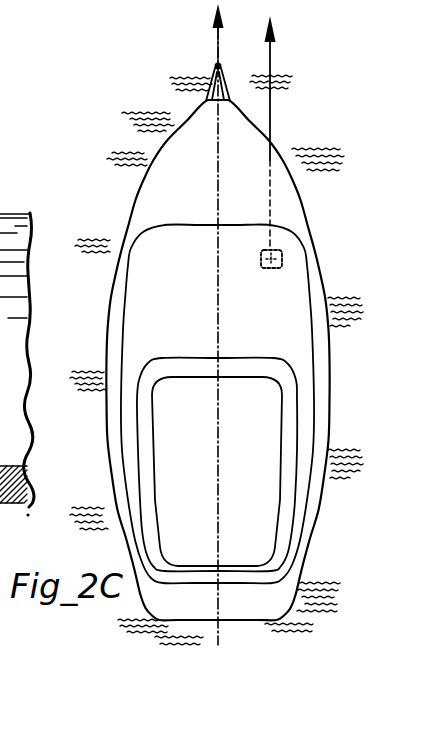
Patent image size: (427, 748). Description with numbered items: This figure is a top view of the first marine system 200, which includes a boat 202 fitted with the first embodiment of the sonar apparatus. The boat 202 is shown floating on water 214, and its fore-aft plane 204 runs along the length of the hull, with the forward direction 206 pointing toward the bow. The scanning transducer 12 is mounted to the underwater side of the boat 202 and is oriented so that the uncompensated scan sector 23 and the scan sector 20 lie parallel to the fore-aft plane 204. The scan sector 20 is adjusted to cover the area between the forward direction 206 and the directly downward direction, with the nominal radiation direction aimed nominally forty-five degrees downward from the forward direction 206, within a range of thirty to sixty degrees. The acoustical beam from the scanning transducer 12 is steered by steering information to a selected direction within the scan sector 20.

The scanning transducer 12 is at (273, 278).
The scan sector 20 is at (301, 133).
The uncompensated scan sector 23 is at (271, 122).
The first marine system 200 is at (172, 105).
The boat 202 is at (188, 342).
The fore-aft plane 204 is at (216, 291).
The forward direction 206 is at (216, 50).
The water 214 is at (95, 317).